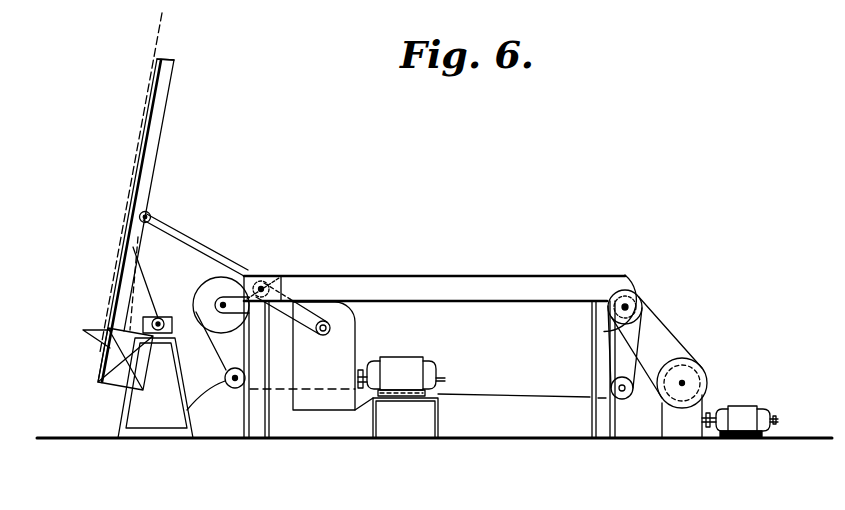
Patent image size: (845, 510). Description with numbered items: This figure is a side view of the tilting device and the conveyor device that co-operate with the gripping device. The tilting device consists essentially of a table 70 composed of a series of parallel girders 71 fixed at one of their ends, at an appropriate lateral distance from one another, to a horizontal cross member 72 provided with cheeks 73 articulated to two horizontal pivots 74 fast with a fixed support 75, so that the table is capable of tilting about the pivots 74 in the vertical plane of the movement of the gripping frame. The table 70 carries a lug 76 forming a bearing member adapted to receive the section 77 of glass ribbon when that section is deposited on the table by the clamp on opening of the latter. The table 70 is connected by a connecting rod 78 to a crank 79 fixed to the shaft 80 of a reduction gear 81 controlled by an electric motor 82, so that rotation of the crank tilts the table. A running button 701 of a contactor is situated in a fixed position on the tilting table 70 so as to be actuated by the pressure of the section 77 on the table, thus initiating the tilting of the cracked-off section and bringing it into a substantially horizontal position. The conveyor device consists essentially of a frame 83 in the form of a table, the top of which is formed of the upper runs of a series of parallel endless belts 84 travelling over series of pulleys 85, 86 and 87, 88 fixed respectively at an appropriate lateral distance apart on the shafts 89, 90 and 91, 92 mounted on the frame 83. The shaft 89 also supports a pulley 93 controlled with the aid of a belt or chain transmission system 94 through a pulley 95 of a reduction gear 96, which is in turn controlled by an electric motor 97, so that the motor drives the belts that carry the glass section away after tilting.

The table 70 is at (137, 183).
The running button 701 is at (150, 134).
The parallel girders 71 is at (163, 117).
The horizontal cross member 72 is at (110, 357).
The cheeks 73 is at (137, 291).
The horizontal pivots 74 is at (161, 317).
The fixed support 75 is at (182, 328).
The lug 76 is at (91, 329).
The section of glass ribbon 77 is at (161, 36).
The connecting rod 78 is at (172, 233).
The crank 79 is at (288, 312).
The shaft 80 is at (320, 320).
The reduction gear 81 is at (337, 318).
The electric motor 82 is at (402, 373).
The frame 83 is at (458, 292).
The endless belts 84 is at (403, 277).
The pulleys 85 is at (633, 283).
The pulleys 86 is at (208, 290).
The pulleys 87 is at (185, 409).
The pulleys 88 is at (641, 376).
The shaft 89 is at (629, 307).
The shaft 90 is at (226, 299).
The shaft 91 is at (232, 388).
The shaft 92 is at (632, 401).
The pulley 93 is at (636, 296).
The belt or chain transmission system 94 is at (681, 344).
The pulley 95 is at (704, 374).
The reduction gear 96 is at (686, 416).
The electric motor 97 is at (742, 420).